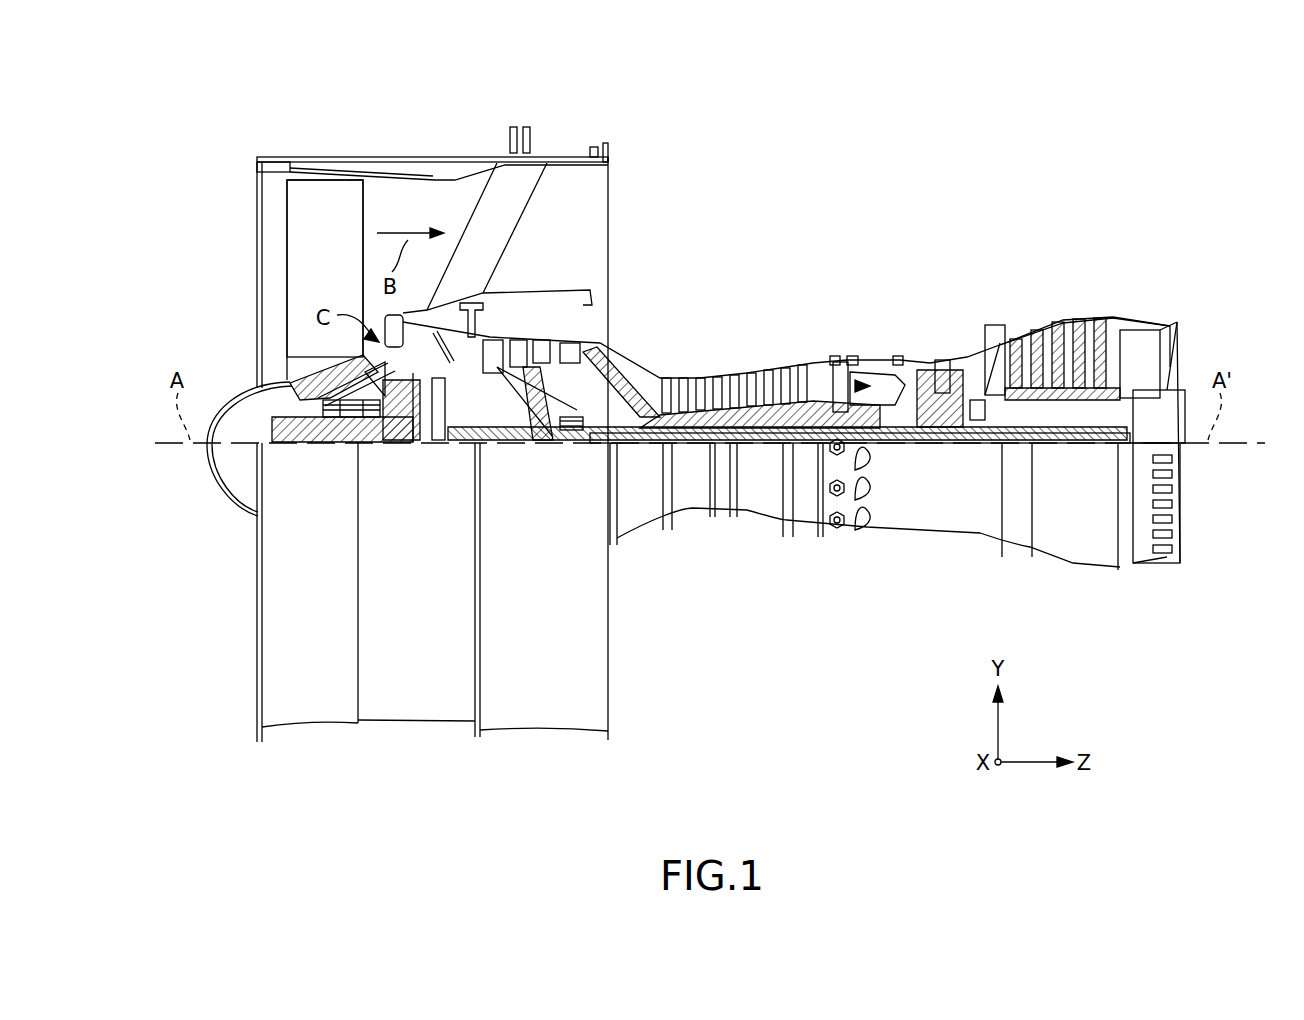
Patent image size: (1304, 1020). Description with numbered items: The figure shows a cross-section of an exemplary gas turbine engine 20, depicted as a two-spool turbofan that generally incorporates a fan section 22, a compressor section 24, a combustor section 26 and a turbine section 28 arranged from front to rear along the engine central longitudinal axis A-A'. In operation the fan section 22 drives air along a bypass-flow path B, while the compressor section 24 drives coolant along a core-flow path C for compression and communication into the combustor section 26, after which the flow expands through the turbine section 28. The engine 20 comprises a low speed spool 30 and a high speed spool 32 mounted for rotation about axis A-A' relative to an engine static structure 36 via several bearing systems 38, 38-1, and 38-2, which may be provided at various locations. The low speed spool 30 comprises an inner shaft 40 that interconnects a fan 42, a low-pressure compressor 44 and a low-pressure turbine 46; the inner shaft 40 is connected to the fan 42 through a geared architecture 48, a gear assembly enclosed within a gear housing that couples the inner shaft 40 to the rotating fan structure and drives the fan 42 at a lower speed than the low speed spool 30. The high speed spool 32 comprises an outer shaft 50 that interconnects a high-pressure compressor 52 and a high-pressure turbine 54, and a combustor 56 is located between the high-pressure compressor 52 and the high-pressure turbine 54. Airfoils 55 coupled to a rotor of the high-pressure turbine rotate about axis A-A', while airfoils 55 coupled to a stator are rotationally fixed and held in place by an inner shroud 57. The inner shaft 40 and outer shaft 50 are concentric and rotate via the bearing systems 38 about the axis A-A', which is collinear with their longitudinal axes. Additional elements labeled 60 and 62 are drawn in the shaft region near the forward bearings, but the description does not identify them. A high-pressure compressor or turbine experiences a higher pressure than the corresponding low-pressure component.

The gas turbine engine 20 is at (916, 156).
The fan section 22 is at (455, 147).
The compressor section 24 is at (482, 258).
The combustor section 26 is at (921, 258).
The turbine section 28 is at (1122, 258).
The low speed spool 30 is at (765, 460).
The high speed spool 32 is at (813, 400).
The engine static structure 36 is at (417, 707).
The bearing system 38 is at (977, 463).
The bearing system 38-1 is at (330, 422).
The bearing system 38-2 is at (563, 433).
The inner shaft 40 is at (630, 450).
The fan 42 is at (332, 451).
The low-pressure compressor 44 is at (590, 340).
The low-pressure turbine 46 is at (1063, 320).
The geared architecture 48 is at (430, 478).
The outer shaft 50 is at (887, 445).
The high-pressure compressor 52 is at (780, 405).
The high-pressure turbine 54 is at (937, 363).
The airfoils 55 is at (505, 345).
The combustor 56 is at (877, 380).
The inner shroud 57 is at (538, 352).
The inner shaft 60 is at (450, 407).
The outer shaft 62 is at (452, 387).